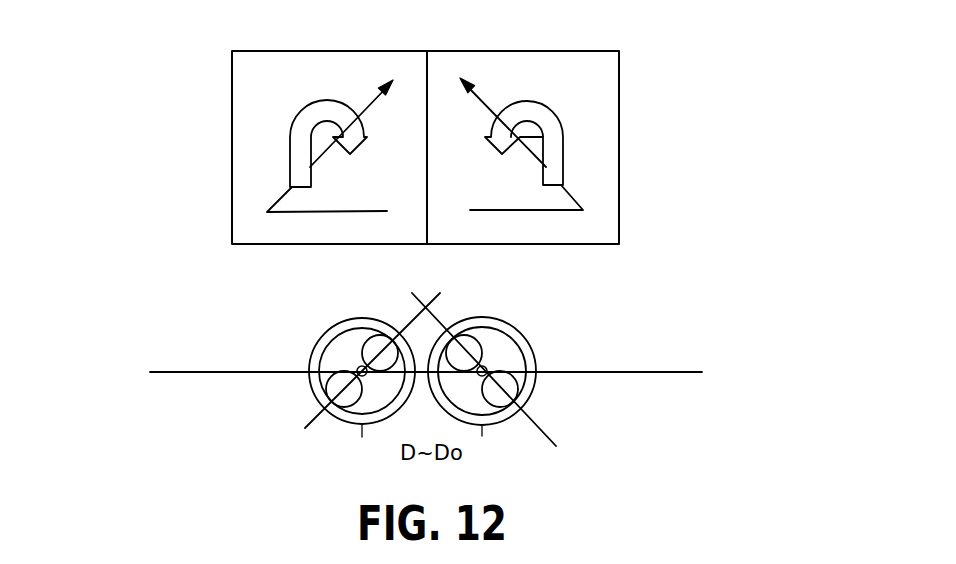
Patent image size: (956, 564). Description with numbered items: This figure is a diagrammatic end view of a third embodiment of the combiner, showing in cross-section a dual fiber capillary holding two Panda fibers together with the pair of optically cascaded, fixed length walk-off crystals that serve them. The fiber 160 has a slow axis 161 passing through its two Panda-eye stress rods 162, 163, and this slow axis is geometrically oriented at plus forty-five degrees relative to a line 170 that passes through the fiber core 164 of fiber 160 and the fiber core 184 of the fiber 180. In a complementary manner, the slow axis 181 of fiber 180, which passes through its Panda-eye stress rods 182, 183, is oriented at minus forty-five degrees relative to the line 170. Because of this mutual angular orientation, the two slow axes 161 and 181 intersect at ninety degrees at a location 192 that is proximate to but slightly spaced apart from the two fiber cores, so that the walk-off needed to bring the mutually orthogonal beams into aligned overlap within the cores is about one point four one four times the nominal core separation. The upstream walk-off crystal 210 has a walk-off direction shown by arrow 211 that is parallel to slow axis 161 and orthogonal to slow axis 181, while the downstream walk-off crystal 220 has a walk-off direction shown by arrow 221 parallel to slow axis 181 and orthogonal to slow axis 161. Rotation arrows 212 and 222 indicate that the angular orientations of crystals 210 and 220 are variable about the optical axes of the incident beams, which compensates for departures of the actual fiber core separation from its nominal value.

The upstream +45° walk-off crystal 210 is at (232, 87).
The walk-off direction arrow 211 is at (360, 113).
The rotation arrow 212 is at (292, 123).
The downstream −45° walk-off crystal 220 is at (620, 98).
The walk-off direction arrow 221 is at (498, 118).
The rotation arrow 222 is at (552, 108).
The fiber 160 is at (312, 392).
The slow axis 161 is at (405, 327).
The Panda-eye stress rod 162 is at (362, 329).
The Panda-eye stress rod 163 is at (354, 412).
The fiber core 164 is at (366, 377).
The line 170 is at (625, 371).
The fiber 180 is at (523, 333).
The slow axis 181 is at (551, 433).
The Panda-eye stress rod 182 is at (480, 345).
The Panda-eye stress rod 183 is at (491, 404).
The fiber core 184 is at (480, 375).
The location 192 is at (421, 311).